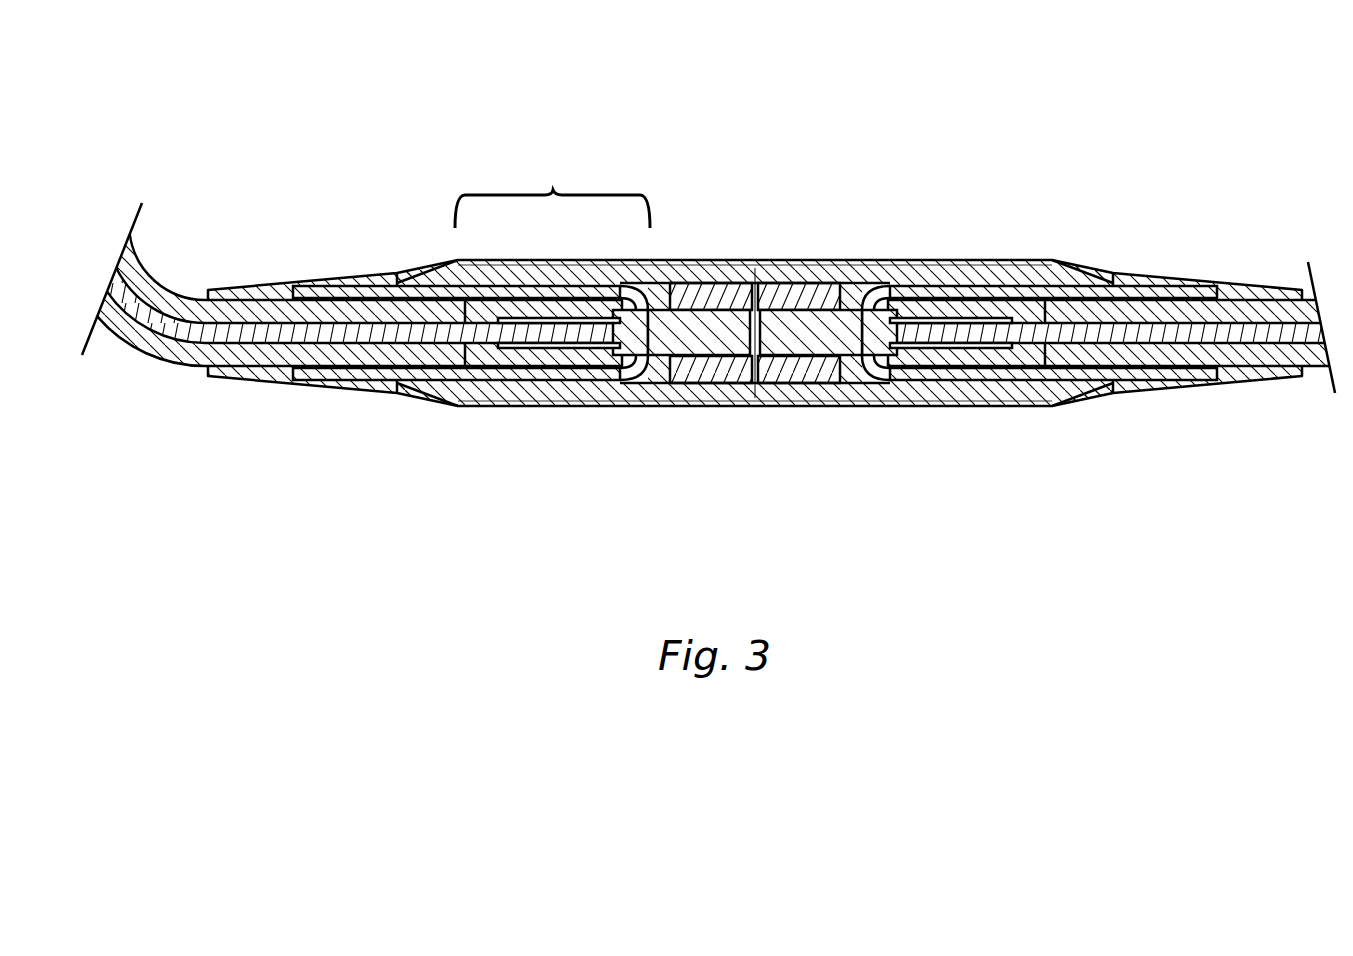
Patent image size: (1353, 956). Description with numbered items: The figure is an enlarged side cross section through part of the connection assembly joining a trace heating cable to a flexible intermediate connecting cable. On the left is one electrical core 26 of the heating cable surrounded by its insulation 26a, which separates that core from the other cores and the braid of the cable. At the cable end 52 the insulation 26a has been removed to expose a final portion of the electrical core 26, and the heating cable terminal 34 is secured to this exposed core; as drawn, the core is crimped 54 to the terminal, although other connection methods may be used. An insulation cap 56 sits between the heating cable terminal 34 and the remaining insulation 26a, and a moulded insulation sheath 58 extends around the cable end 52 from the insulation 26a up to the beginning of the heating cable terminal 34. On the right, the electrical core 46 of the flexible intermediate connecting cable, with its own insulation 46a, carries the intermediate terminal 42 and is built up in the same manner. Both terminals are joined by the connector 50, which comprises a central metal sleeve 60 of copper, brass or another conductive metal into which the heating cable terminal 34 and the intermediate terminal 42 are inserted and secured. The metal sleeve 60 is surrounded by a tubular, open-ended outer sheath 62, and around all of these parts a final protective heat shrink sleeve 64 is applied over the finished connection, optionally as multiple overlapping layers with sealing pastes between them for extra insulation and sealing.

The electrical core 26 is at (185, 333).
The insulation 26a is at (130, 347).
The heating cable terminal 34 is at (708, 323).
The intermediate terminal 42 is at (800, 325).
The electrical core 46 is at (1158, 335).
The insulation 46a is at (1258, 355).
The connector 50 is at (930, 124).
The cable end 52 is at (553, 192).
The crimp 54 is at (538, 350).
The insulation cap 56 is at (573, 362).
The moulded insulation sheath 58 is at (430, 290).
The central metal sleeve 60 is at (712, 383).
The outer sheath 62 is at (857, 280).
The protective heat shrink sleeve 64 is at (1168, 280).